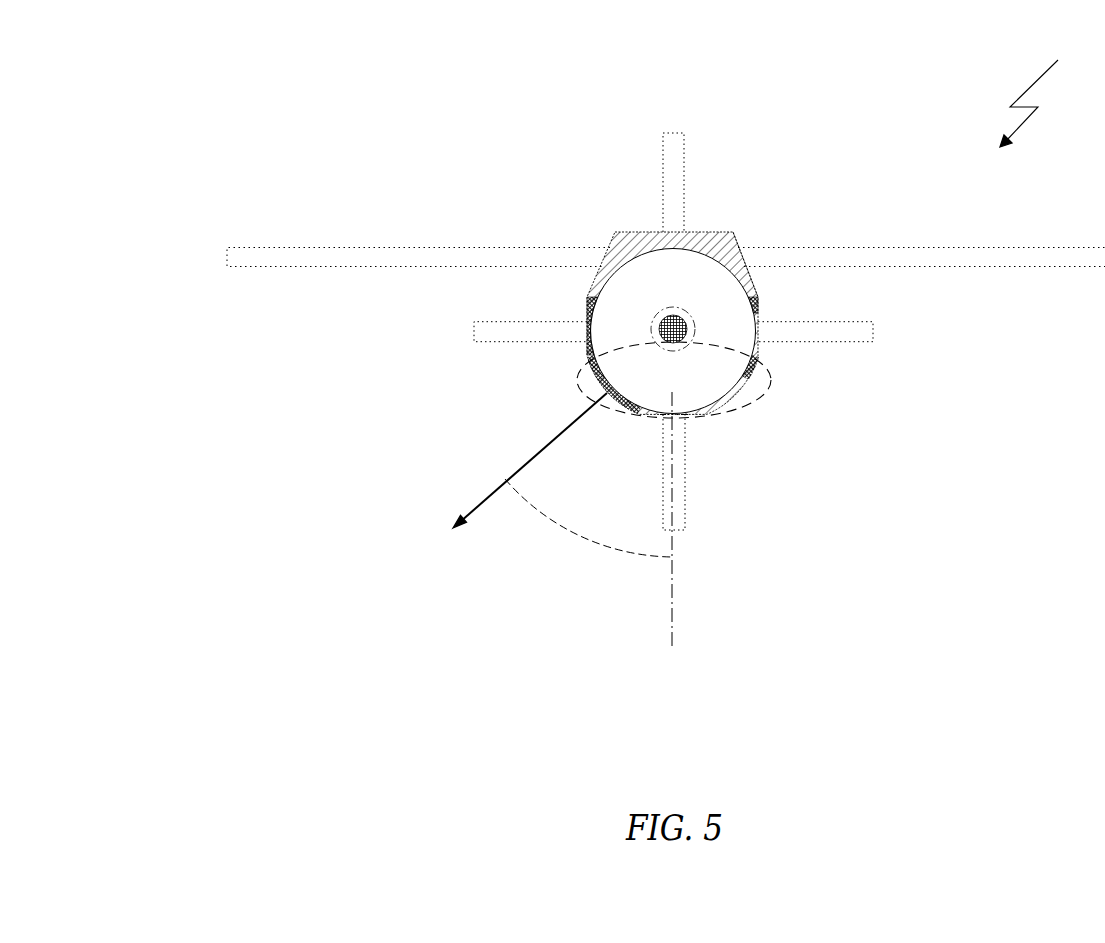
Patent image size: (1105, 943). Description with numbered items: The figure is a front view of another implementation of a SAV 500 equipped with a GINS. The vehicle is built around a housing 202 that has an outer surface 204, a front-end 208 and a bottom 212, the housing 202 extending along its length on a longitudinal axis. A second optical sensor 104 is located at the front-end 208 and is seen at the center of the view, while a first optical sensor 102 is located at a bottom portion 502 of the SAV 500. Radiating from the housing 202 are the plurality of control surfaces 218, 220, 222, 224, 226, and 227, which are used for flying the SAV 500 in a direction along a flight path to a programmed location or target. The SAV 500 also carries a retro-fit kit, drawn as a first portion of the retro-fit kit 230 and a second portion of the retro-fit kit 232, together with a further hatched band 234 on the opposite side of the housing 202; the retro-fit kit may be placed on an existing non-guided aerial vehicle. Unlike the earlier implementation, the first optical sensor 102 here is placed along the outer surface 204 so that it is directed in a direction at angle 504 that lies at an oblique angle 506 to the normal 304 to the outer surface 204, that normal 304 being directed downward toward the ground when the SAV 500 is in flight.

The SAV 500 is at (1043, 93).
The control surface 222 is at (670, 163).
The control surface 220 is at (368, 262).
The control surface 218 is at (852, 260).
The front-end 208 is at (638, 287).
The first portion of the retro-fit kit 230 is at (723, 232).
The second portion of the retro-fit kit 232 is at (588, 298).
The housing 202 is at (757, 297).
The right coupling band 234 is at (760, 358).
The first optical sensor 102 is at (598, 390).
The second optical sensor 104 is at (693, 332).
The control surface 224 is at (490, 332).
The control surface 227 is at (843, 330).
The control surface 226 is at (682, 485).
The bottom 212 is at (652, 418).
The outer surface 204 is at (632, 418).
The bottom portion 502 is at (755, 405).
The angle 504 is at (487, 497).
The oblique angle 506 is at (585, 547).
The normal 304 is at (673, 611).